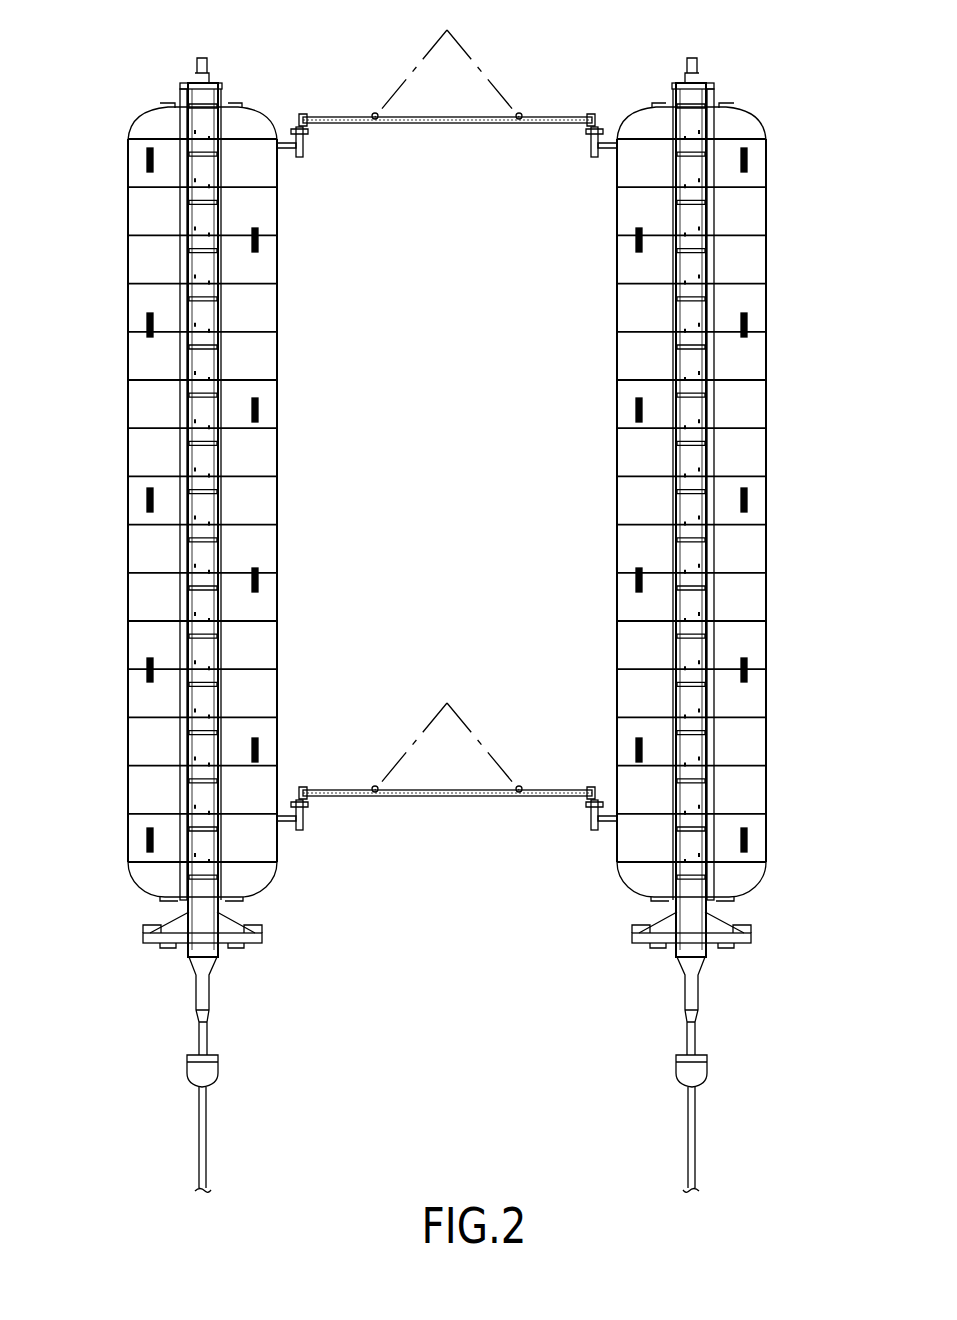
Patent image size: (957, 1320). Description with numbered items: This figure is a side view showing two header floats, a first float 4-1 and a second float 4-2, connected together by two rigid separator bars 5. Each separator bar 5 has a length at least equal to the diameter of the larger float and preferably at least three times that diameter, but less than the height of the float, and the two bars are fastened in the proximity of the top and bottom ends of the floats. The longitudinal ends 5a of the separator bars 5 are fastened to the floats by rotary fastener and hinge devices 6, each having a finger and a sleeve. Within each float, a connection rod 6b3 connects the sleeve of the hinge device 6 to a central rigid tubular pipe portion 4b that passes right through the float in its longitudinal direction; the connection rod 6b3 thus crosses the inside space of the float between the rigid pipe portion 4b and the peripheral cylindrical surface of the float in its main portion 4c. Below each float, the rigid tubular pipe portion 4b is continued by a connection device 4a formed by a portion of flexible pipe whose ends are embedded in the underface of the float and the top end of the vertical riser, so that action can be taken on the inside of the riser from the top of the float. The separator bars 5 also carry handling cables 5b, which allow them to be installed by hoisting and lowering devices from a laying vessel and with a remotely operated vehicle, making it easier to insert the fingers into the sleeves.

The first float 4-1 is at (746, 502).
The second float 4-2 is at (113, 592).
The connection device (flexible pipe portion) 4a is at (200, 1157).
The rigid tubular pipe portion 4b is at (200, 948).
The main portion of the float 4c is at (146, 362).
The separator bar 5 is at (447, 125).
The longitudinal end of the separator bar 5a is at (312, 126).
The handling cable 5b is at (488, 80).
The rotary fastener and hinge device 6 is at (302, 152).
The connection rod 6b3 is at (286, 143).